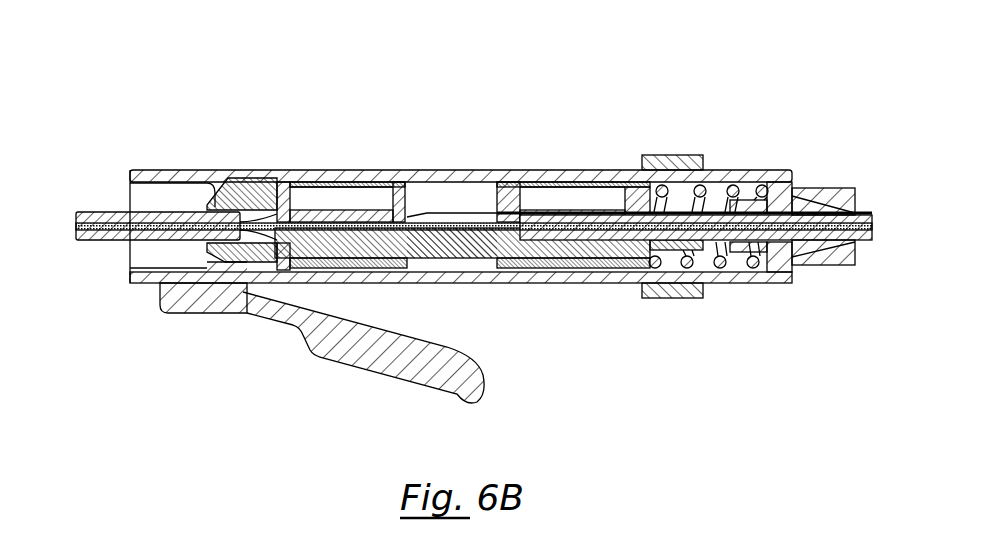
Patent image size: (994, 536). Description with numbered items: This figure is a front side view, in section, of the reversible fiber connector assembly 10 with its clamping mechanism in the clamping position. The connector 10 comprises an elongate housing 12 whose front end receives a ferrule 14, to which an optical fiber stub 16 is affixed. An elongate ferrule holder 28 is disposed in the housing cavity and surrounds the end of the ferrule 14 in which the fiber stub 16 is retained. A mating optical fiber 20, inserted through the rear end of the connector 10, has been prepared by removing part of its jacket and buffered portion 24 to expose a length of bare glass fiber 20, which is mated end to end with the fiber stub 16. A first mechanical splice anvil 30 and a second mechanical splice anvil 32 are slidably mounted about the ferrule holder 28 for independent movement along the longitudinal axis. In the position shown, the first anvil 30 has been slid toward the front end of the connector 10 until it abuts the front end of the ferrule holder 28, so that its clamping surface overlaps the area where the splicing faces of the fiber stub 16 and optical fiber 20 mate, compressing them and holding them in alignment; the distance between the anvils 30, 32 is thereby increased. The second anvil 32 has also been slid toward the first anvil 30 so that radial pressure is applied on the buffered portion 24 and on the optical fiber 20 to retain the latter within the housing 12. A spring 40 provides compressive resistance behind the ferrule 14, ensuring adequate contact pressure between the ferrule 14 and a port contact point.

The reversible fiber connector assembly 10 is at (467, 228).
The housing 12 is at (185, 178).
The ferrule 14 is at (115, 210).
The optical fiber stub 16 is at (80, 222).
The optical fiber 20 is at (517, 249).
The buffered portion 24 is at (812, 230).
The ferrule holder 28 is at (457, 247).
The first mechanical splice anvil 30 is at (400, 181).
The second mechanical splice anvil 32 is at (548, 181).
The spring 40 is at (735, 268).